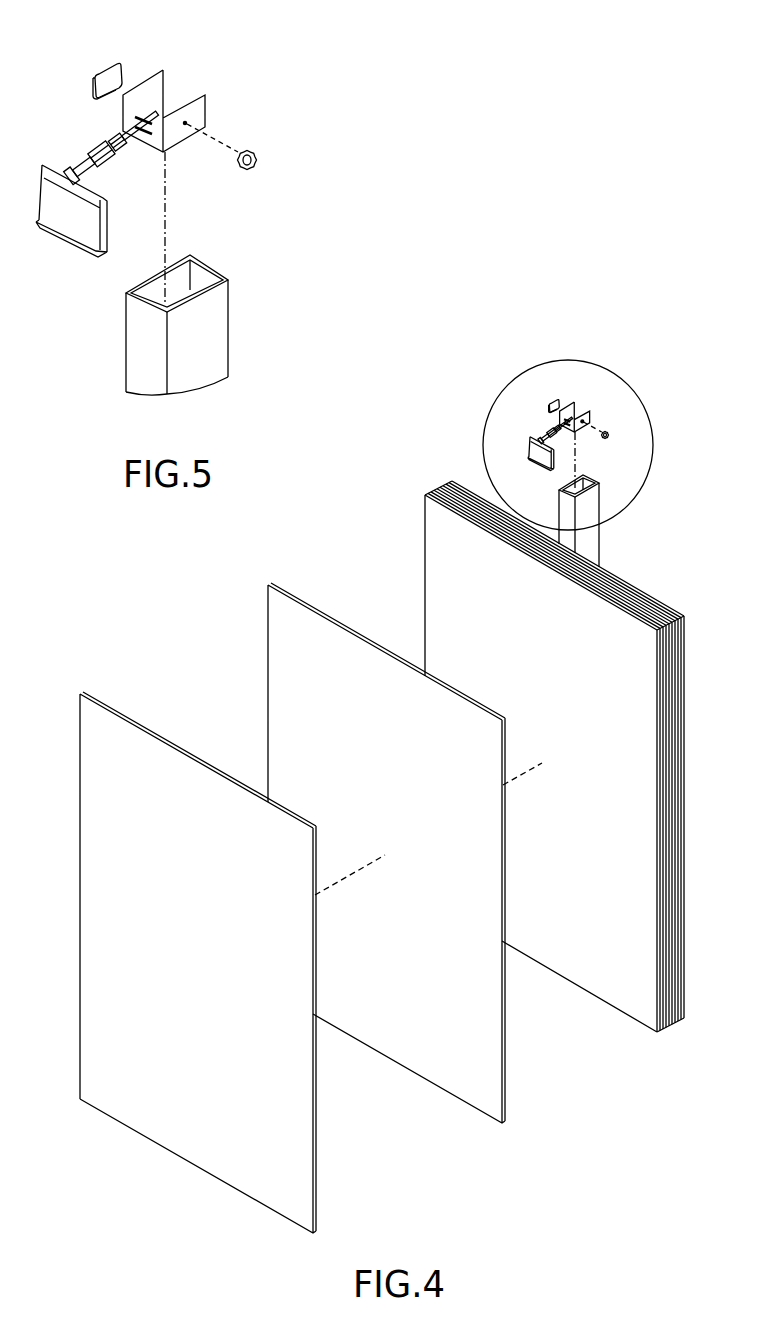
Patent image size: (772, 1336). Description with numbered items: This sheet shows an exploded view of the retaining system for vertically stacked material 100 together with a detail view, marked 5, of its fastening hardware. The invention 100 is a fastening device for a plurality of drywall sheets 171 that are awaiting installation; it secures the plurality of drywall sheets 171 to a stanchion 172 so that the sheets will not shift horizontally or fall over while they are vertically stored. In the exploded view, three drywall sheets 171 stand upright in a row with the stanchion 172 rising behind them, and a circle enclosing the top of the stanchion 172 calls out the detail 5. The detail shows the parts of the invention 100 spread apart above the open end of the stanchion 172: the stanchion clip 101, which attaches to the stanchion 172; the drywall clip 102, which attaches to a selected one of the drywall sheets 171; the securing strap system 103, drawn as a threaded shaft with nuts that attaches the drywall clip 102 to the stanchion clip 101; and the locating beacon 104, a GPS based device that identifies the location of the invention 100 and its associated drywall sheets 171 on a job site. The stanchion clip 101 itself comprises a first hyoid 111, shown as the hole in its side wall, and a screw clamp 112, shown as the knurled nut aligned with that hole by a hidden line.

In FIG. 4, the retaining system for vertically stacked material 100 is at (583, 390).
In FIG. 5, the stanchion clip 101 is at (211, 107).
In FIG. 5, the drywall clip 102 is at (80, 259).
In FIG. 5, the securing strap system 103 is at (92, 145).
In FIG. 5, the locating beacon 104 is at (112, 83).
In FIG. 5, the first hyoid 111 is at (189, 114).
In FIG. 5, the screw clamp 112 is at (258, 150).
In FIG. 4, the plurality of drywall sheets 171 is at (503, 1053).
In FIG. 5, the stanchion 172 is at (228, 328).
In FIG. 4, the stanchion 172 is at (600, 548).
In FIG. 4, the detail view FIG. 5 is at (642, 400).